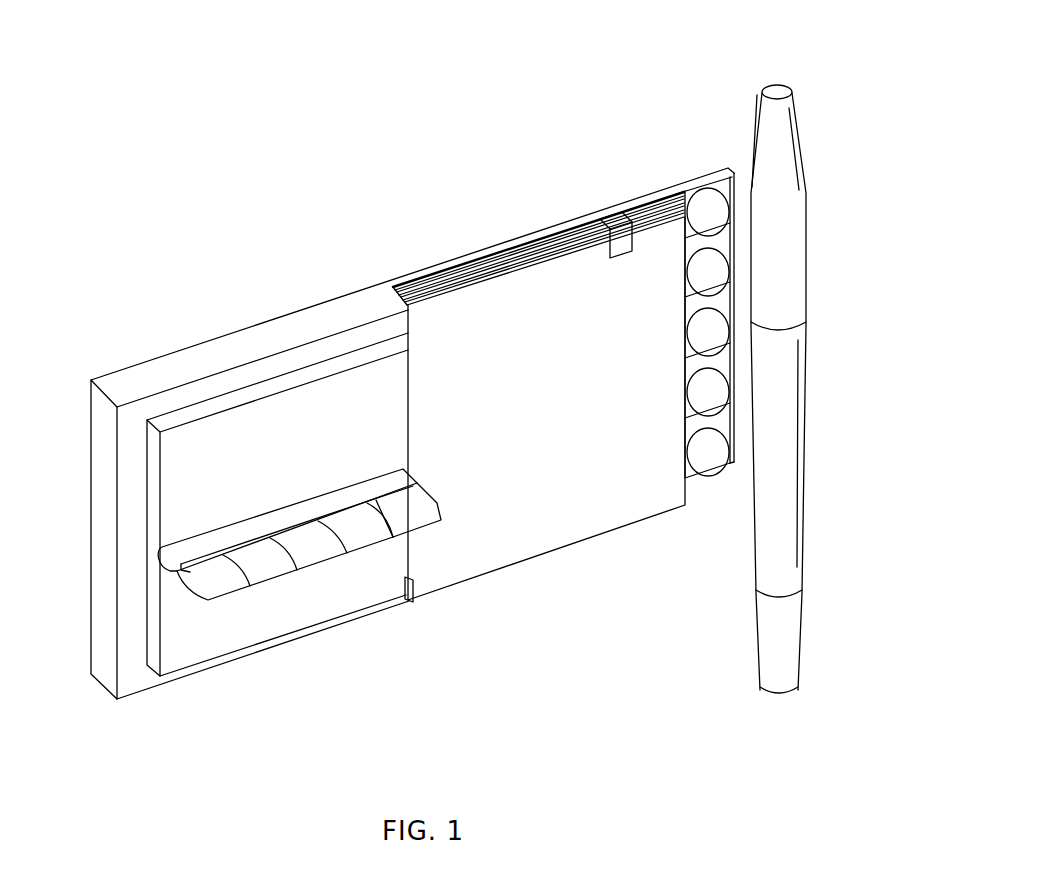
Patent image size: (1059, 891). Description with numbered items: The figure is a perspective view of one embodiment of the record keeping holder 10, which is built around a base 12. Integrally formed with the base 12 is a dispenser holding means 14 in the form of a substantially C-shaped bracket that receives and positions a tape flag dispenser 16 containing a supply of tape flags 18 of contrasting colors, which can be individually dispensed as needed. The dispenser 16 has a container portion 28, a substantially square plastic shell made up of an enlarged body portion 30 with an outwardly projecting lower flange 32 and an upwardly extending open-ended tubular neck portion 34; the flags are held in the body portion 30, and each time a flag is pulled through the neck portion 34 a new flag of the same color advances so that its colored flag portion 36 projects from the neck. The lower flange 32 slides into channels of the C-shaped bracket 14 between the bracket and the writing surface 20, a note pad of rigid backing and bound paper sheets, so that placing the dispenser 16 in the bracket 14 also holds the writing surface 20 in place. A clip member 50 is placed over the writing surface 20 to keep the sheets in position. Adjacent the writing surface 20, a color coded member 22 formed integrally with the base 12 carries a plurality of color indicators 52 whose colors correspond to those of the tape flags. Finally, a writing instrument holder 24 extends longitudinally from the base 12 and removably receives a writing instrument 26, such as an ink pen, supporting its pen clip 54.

The record keeping holder 10 is at (320, 190).
The base 12 is at (472, 250).
The dispenser holding means 14 is at (162, 370).
The tape flag dispenser 16 is at (152, 605).
The tape flags 18 is at (371, 550).
The writing surface 20 is at (560, 517).
The color coded member 22 is at (712, 483).
The writing instrument holder 24 is at (741, 172).
The writing instrument 26 is at (788, 287).
The container portion 28 is at (236, 630).
The body portion 30 is at (284, 617).
The lower flange 32 is at (410, 362).
The neck portion 34 is at (398, 475).
The colored flag portion 36 is at (430, 504).
The clip member 50 is at (614, 224).
The color indicators 52 is at (700, 392).
The pen clip 54 is at (742, 120).